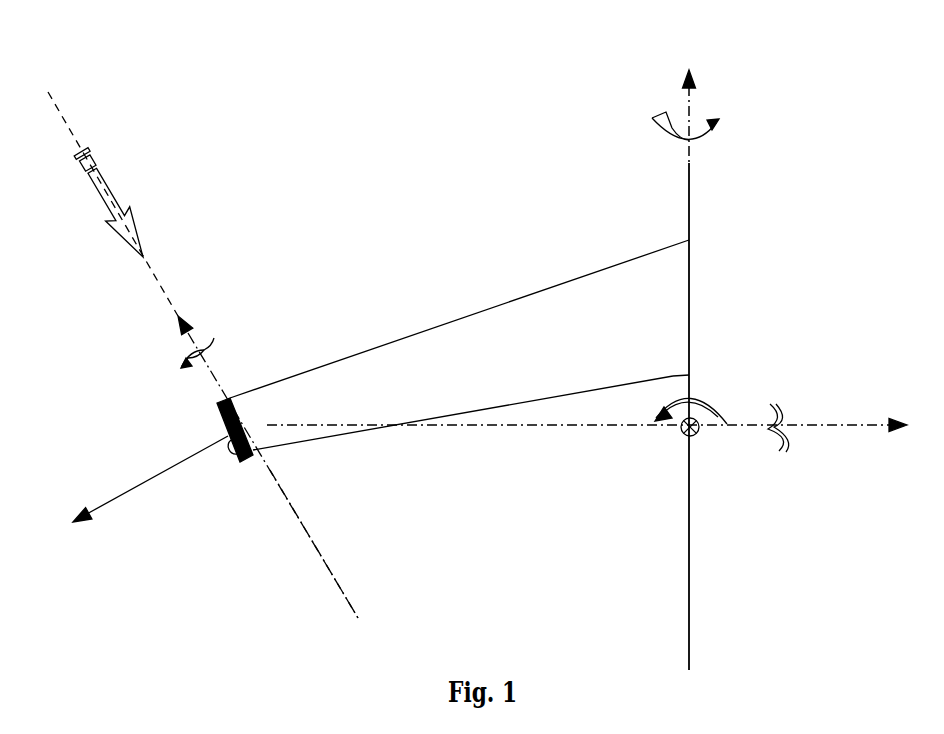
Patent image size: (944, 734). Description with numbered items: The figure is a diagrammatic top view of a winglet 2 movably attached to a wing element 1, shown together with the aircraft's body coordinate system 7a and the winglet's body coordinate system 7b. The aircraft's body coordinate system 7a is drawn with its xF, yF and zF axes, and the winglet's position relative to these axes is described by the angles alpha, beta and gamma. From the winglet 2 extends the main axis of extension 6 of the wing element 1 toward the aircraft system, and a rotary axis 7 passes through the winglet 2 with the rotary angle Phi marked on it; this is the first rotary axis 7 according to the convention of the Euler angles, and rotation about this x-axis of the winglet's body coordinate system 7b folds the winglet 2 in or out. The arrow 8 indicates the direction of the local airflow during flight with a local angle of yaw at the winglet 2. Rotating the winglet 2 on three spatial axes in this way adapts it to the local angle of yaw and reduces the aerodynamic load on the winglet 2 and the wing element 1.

The wing element 1 is at (548, 402).
The winglet 2 is at (216, 403).
The main axis of extension 6 is at (408, 438).
The rotary axis 7 is at (280, 520).
The aircraft's body coordinate system 7a is at (587, 354).
The winglet's body coordinate system 7b is at (205, 355).
The arrow 8 is at (137, 202).